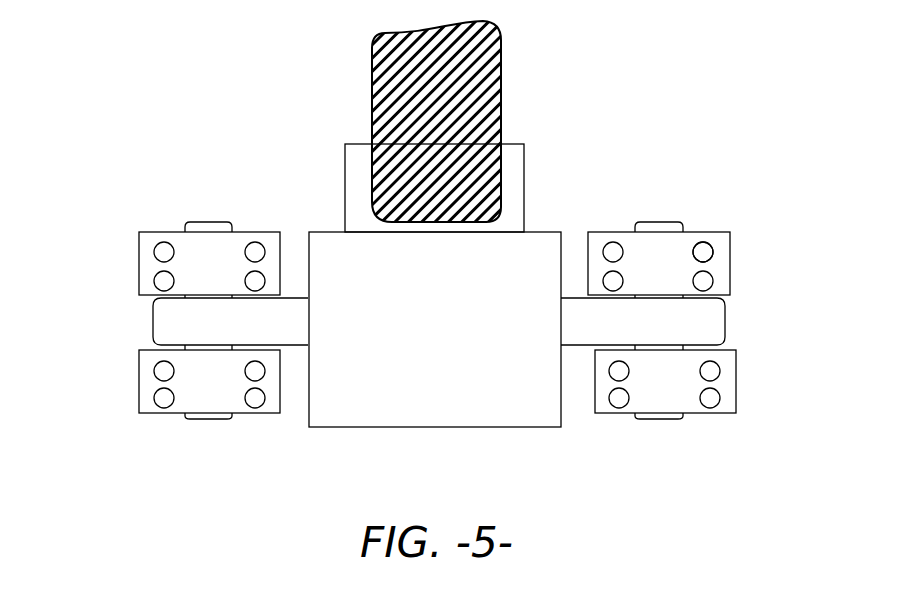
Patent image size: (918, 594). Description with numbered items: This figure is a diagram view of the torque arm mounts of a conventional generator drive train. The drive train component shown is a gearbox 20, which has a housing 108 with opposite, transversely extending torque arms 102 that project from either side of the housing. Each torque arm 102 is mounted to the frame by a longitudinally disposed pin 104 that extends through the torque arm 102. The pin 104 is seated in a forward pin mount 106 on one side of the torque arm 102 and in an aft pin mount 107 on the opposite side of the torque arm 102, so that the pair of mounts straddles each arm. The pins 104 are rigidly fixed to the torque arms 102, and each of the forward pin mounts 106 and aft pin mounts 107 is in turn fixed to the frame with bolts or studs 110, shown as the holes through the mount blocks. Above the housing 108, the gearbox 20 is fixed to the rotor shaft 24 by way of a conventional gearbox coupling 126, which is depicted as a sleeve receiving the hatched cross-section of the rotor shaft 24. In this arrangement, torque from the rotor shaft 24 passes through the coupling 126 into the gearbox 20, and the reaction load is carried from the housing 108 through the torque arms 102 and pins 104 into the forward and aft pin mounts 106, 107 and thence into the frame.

The gearbox 20 is at (428, 297).
The rotor shaft 24 is at (502, 97).
The torque arm 102 is at (153, 329).
The pin 104 is at (202, 222).
The forward pin mount 106 is at (138, 248).
The aft pin mount 107 is at (138, 383).
The housing 108 is at (449, 333).
The bolts or studs 110 is at (703, 237).
The gearbox coupling 126 is at (343, 193).